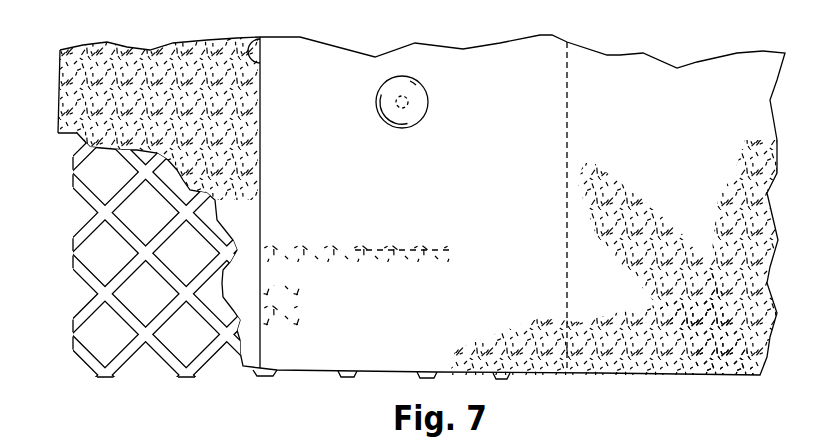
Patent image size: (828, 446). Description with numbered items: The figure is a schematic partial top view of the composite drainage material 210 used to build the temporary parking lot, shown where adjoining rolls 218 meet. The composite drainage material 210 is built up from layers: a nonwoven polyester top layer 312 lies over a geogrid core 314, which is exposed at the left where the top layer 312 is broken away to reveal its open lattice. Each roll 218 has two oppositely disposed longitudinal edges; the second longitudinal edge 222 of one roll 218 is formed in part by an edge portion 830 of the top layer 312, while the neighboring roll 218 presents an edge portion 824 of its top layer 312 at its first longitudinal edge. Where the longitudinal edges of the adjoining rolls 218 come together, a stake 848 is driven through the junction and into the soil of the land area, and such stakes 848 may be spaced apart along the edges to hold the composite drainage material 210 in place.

The composite drainage material 210 is at (221, 30).
The roll 218 is at (148, 70).
The nonwoven polyester top layer 312 is at (168, 72).
The geogrid core 314 is at (207, 357).
The edge portion of the top layer 830 is at (258, 37).
The stake 848 is at (396, 78).
The edge portion of the top layer 824 is at (567, 78).
The second longitudinal edge 222 is at (286, 382).